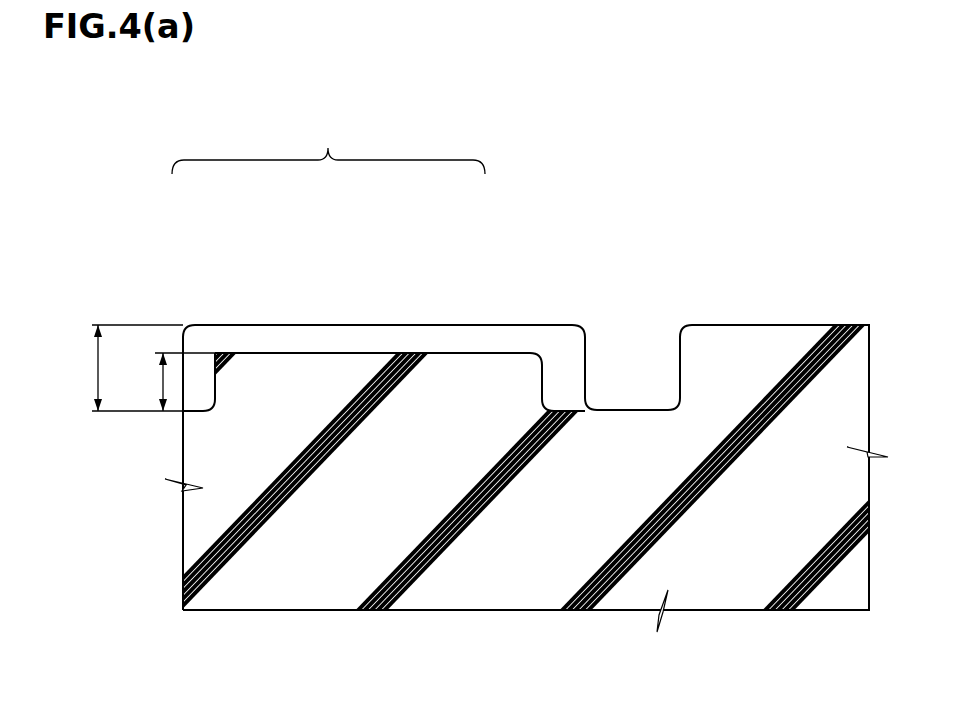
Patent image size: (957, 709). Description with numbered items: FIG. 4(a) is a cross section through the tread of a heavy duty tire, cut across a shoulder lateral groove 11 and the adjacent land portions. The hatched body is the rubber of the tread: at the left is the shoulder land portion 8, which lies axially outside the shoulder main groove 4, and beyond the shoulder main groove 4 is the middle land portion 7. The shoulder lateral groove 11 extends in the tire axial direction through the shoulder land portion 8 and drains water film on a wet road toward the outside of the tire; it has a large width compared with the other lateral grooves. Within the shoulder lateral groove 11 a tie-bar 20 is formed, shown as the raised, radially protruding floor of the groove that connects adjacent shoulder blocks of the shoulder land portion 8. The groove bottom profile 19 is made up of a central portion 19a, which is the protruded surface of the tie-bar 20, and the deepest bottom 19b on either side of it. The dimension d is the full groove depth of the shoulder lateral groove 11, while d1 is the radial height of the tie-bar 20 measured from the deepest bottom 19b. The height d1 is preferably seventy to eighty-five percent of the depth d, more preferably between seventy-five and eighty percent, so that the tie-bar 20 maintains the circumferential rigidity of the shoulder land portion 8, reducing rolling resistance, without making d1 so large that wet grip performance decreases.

The shoulder main groove 4 is at (644, 390).
The middle land portion 7 is at (768, 324).
The shoulder land portion 8 is at (558, 324).
The shoulder lateral groove 11 is at (275, 343).
The film layer 19 is at (328, 146).
The central film portion 19a is at (330, 352).
The deepest bottom 19b is at (190, 410).
The tie-bar 20 is at (405, 352).
The groove depth d is at (136, 368).
The radial height d1 is at (170, 382).